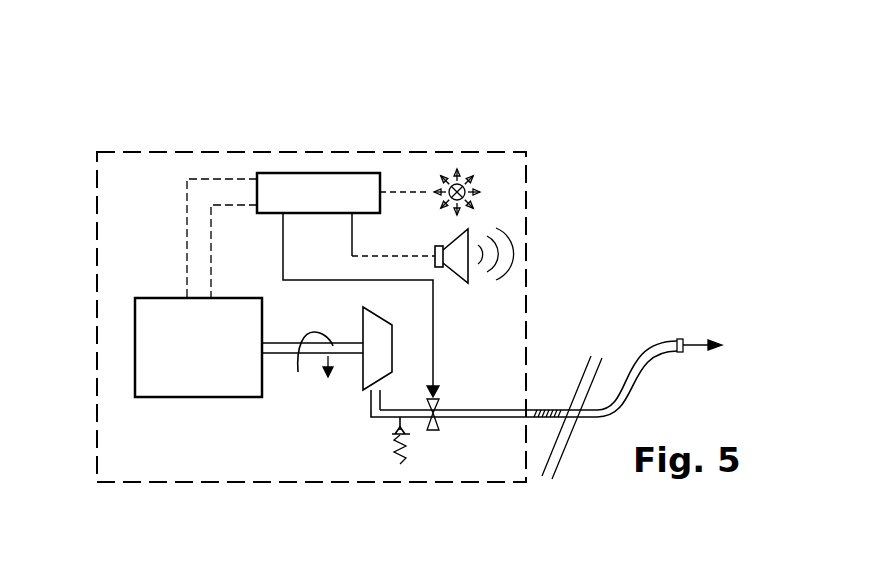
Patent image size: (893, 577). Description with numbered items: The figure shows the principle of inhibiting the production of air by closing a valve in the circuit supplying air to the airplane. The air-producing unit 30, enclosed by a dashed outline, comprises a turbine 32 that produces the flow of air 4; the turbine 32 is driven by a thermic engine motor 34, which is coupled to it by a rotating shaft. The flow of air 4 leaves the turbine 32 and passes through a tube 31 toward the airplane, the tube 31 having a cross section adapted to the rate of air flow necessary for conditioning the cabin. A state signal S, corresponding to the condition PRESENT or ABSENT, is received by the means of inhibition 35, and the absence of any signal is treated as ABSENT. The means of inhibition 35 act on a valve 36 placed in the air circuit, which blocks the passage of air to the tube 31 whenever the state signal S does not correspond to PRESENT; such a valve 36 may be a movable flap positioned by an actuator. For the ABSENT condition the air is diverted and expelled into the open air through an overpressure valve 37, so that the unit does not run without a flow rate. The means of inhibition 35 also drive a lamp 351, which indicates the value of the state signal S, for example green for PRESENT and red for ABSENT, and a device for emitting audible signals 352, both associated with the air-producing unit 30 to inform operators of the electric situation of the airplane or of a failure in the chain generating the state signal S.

The air-producing unit 30 is at (148, 502).
The means of inhibition 35 is at (272, 172).
The state signal S is at (307, 172).
The lamp 351 is at (456, 176).
The device for emitting audible signals 352 is at (457, 284).
The thermic engine motor 34 is at (199, 399).
The turbine 32 is at (390, 340).
The tube 31 is at (556, 408).
The flow of air 4 is at (692, 340).
The valve 36 is at (443, 425).
The overpressure valve 37 is at (392, 446).